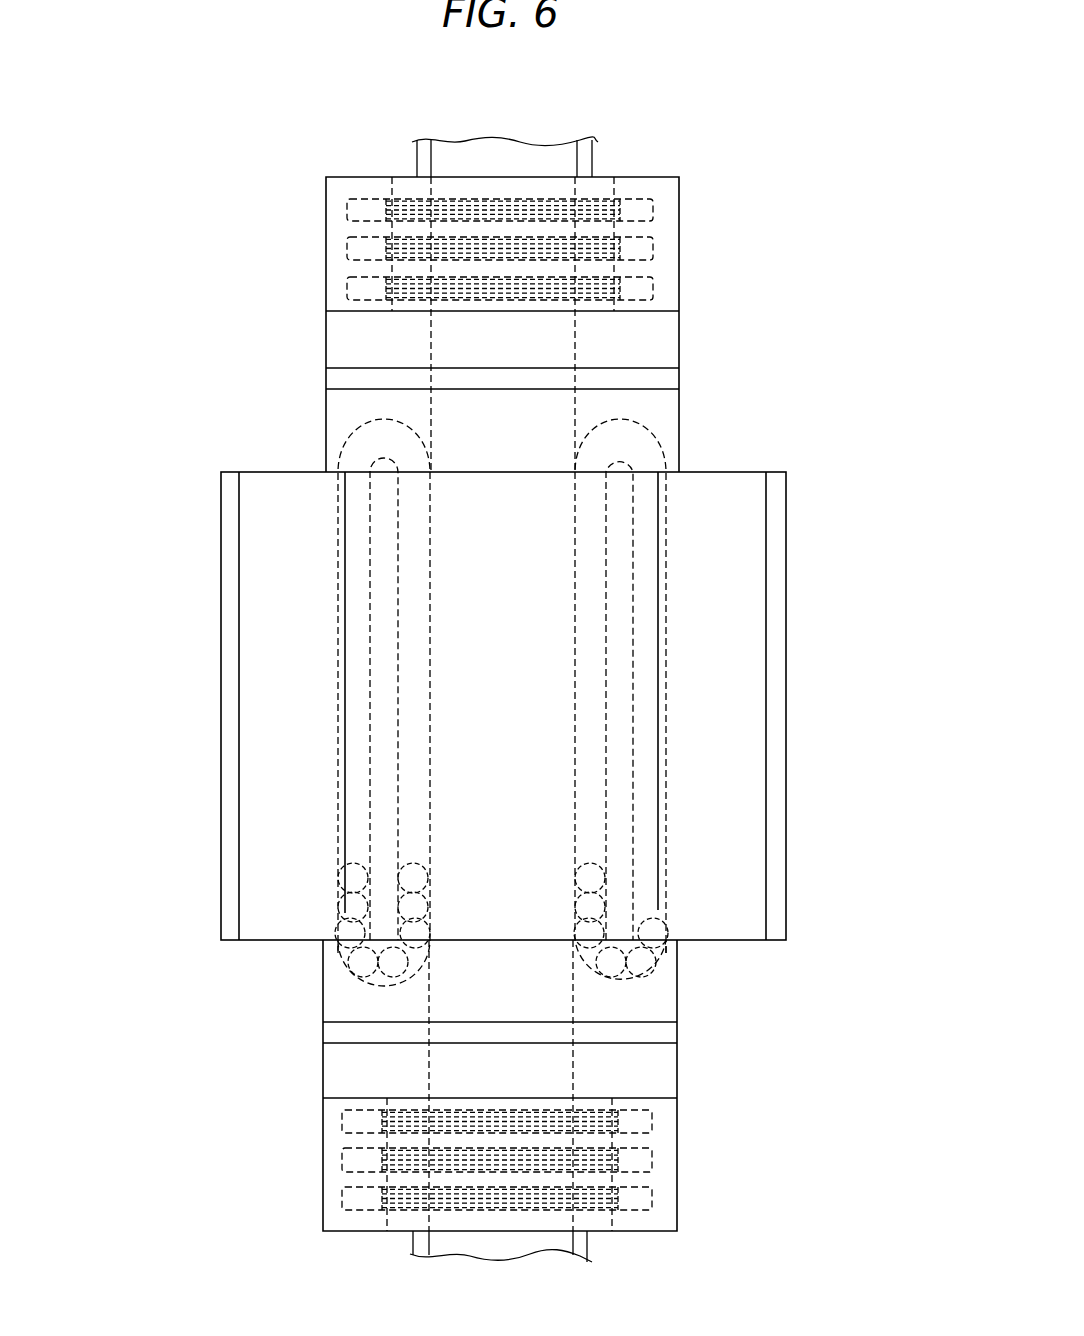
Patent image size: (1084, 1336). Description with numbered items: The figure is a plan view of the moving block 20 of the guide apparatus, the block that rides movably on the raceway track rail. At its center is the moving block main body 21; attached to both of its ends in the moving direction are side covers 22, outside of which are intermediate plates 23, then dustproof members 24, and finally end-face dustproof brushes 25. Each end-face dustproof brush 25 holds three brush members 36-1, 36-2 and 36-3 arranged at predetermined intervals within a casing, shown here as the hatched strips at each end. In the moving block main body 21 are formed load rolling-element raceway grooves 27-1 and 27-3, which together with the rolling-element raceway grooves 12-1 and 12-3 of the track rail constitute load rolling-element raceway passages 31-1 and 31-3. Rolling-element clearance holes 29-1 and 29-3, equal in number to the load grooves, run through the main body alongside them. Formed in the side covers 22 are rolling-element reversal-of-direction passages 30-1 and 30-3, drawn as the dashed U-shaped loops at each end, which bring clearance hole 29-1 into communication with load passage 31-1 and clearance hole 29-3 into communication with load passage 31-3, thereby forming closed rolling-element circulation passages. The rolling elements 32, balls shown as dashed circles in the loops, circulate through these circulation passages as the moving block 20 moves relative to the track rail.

The moving block 20 is at (192, 587).
The moving block main body 21 is at (742, 559).
The side cover 22 is at (663, 408).
The intermediate plate 23 is at (663, 378).
The dustproof member 24 is at (658, 325).
The end-face dustproof brush 25 is at (668, 268).
The brush member 36-1 is at (653, 204).
The brush member 36-2 is at (653, 243).
The brush member 36-3 is at (653, 289).
The rolling-element reversal-of-direction passage 30-1 is at (650, 439).
The rolling-element reversal-of-direction passage 30-3 is at (377, 427).
The rolling-element raceway groove 12-1 is at (575, 600).
The rolling-element raceway groove 12-3 is at (430, 526).
The load rolling-element raceway groove 27-1 is at (606, 636).
The load rolling-element raceway groove 27-3 is at (397, 655).
The rolling-element clearance hole 29-1 is at (655, 695).
The rolling-element clearance hole 29-3 is at (345, 775).
The load rolling-element raceway passage 31-1 is at (592, 752).
The load rolling-element raceway passage 31-3 is at (410, 705).
The rolling element 32 is at (410, 878).